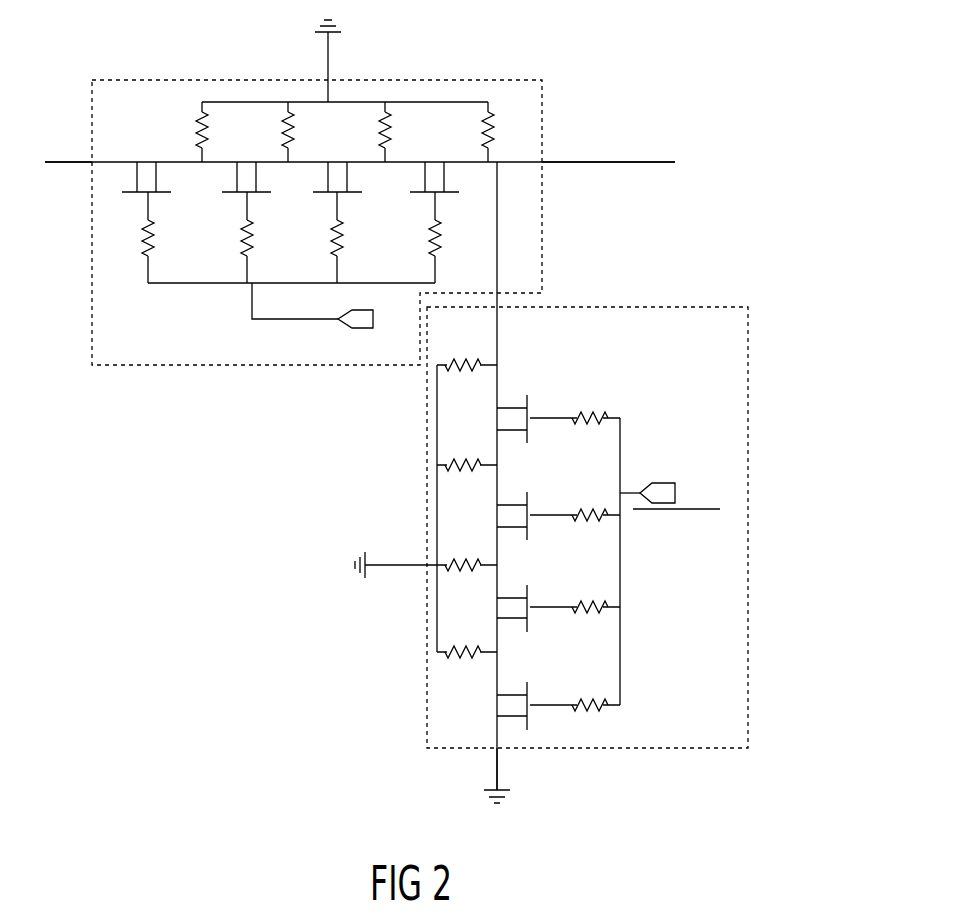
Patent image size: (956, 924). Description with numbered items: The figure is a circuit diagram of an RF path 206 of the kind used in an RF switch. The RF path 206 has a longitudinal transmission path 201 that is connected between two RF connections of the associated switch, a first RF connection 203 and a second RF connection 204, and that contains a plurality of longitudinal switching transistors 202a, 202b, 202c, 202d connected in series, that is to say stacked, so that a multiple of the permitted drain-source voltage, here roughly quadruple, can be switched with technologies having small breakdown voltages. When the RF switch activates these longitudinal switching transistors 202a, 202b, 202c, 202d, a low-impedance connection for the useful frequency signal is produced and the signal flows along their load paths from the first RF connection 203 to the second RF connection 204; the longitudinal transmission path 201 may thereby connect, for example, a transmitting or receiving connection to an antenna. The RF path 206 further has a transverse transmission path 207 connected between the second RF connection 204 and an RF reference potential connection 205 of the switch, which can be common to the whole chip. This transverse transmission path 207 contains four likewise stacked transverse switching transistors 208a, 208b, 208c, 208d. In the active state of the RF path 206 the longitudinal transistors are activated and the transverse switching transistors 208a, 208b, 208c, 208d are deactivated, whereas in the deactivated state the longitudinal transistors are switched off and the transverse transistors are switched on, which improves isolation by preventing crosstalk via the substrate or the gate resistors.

The longitudinal transmission path 201 is at (180, 367).
The longitudinal switching transistor 202a is at (140, 197).
The longitudinal switching transistor 202b is at (243, 198).
The longitudinal switching transistor 202c is at (333, 198).
The longitudinal switching transistor 202d is at (431, 198).
The first RF connection 203 is at (62, 166).
The second RF connection 204 is at (655, 166).
The RF reference potential connection 205 is at (497, 786).
The RF path 206 is at (712, 58).
The transverse transmission path 207 is at (748, 527).
The transverse switching transistor 208a is at (530, 418).
The transverse switching transistor 208b is at (530, 515).
The transverse switching transistor 208c is at (530, 607).
The transverse switching transistor 208d is at (527, 708).